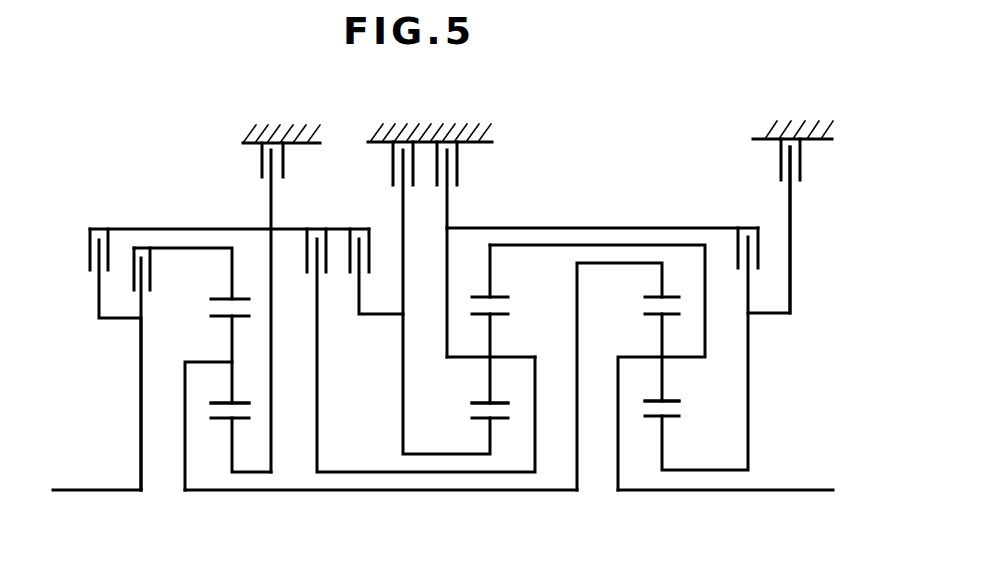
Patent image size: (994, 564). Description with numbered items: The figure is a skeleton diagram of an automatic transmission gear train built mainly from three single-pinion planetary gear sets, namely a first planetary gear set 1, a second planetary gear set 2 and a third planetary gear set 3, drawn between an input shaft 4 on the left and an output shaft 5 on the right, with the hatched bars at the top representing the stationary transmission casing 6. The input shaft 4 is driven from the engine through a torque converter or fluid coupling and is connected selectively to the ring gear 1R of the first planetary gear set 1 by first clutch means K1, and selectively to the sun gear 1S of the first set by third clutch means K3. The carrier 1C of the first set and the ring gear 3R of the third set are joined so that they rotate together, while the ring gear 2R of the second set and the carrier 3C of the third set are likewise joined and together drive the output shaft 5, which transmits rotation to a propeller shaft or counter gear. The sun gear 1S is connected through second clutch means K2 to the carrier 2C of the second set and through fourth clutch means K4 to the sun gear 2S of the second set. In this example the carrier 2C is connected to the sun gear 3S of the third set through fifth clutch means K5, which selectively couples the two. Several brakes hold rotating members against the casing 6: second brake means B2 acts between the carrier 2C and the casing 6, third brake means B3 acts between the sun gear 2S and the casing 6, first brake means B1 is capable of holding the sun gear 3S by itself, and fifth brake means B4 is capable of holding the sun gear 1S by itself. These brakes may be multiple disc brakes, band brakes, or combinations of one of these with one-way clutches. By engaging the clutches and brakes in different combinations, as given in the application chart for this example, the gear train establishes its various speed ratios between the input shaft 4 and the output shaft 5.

The first planetary gear set 1 is at (218, 463).
The second planetary gear set 2 is at (474, 457).
The third planetary gear set 3 is at (654, 460).
The input shaft 4 is at (103, 489).
The output shaft 5 is at (786, 489).
The transmission casing 6 is at (252, 137).
The sun gear of the first planetary gear set 1S is at (236, 419).
The ring gear of the first planetary gear set 1R is at (240, 298).
The carrier of the first planetary gear set 1C is at (213, 360).
The sun gear of the second planetary gear set 2S is at (486, 419).
The ring gear of the second planetary gear set 2R is at (496, 296).
The carrier of the second planetary gear set 2C is at (512, 356).
The sun gear of the third planetary gear set 3S is at (665, 417).
The ring gear of the third planetary gear set 3R is at (657, 296).
The carrier of the third planetary gear set 3C is at (652, 356).
The first clutch means K1 is at (183, 369).
The second clutch means K2 is at (417, 337).
The third clutch means K3 is at (110, 346).
The fourth clutch means K4 is at (374, 258).
The fifth clutch means K5 is at (756, 230).
The first brake means B1 is at (794, 206).
The second brake means B2 is at (451, 226).
The third brake means B3 is at (437, 275).
The fifth brake means B4 is at (278, 284).